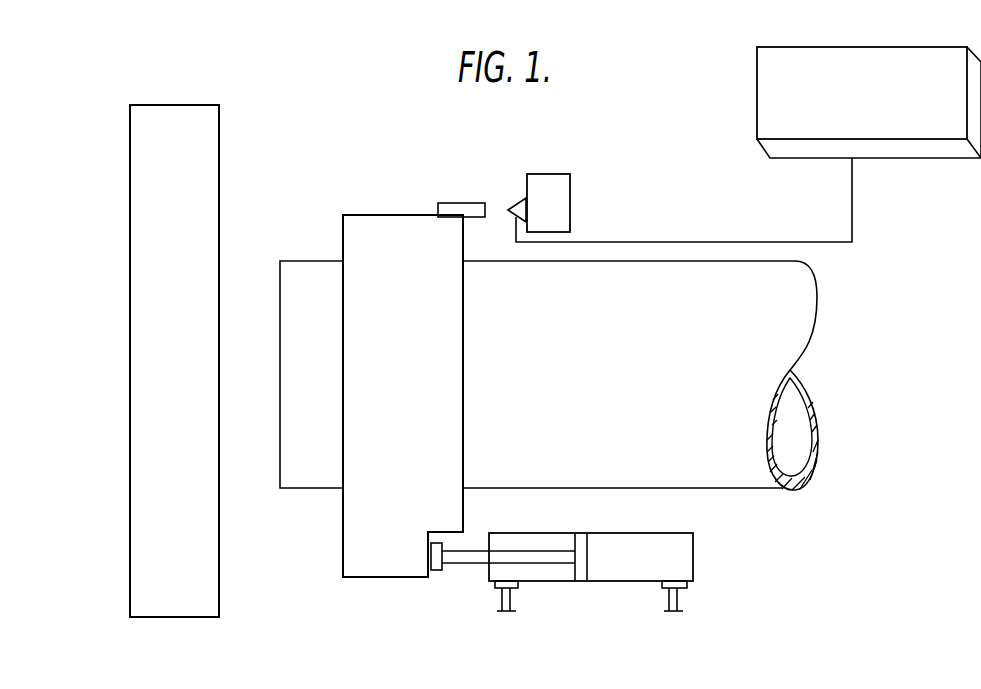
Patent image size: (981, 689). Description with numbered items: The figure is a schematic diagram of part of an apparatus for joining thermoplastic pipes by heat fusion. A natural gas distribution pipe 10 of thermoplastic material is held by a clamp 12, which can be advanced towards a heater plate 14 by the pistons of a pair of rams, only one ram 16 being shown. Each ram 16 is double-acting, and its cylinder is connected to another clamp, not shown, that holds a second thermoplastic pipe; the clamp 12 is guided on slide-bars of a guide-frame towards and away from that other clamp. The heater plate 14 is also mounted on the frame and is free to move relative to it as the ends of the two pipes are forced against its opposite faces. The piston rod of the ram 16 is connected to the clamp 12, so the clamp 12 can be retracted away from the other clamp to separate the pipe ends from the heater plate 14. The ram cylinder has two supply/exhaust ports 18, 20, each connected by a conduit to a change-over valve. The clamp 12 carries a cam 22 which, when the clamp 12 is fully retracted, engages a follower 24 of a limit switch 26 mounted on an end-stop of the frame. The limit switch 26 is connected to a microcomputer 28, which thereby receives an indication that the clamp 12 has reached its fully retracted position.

The natural gas distribution pipe 10 is at (628, 386).
The clamp 12 is at (413, 386).
The heater plate 14 is at (90, 437).
The ram 16 is at (586, 590).
The supply/exhaust port 18 is at (500, 588).
The supply/exhaust port 20 is at (684, 590).
The cam 22 is at (438, 206).
The follower 24 is at (512, 213).
The limit switch 26 is at (492, 130).
The microcomputer 28 is at (757, 134).